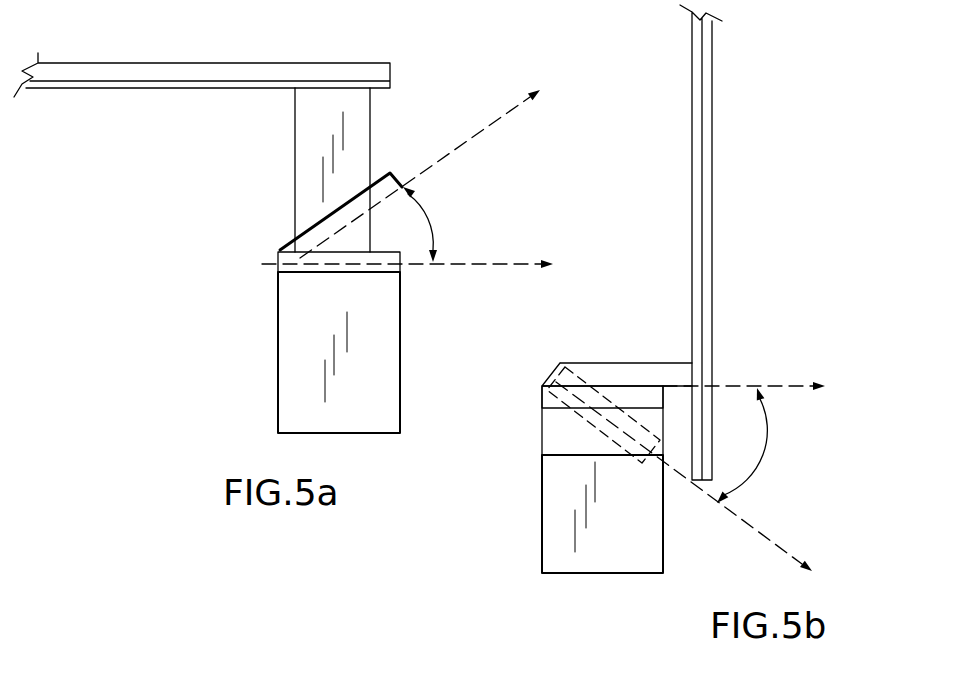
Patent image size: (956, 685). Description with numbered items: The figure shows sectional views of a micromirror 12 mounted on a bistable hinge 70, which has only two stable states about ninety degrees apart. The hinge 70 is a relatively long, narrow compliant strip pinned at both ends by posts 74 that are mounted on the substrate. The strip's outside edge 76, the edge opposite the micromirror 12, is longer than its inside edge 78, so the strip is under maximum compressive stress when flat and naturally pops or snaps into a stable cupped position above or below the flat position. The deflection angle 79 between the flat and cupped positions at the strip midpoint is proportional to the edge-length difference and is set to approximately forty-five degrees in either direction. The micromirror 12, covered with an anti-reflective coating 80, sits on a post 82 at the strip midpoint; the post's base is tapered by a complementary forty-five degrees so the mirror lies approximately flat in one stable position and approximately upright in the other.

In FIG. 5A, the micromirror 12 is at (121, 131).
In FIG. 5A, the hinge 70 is at (242, 326).
In FIG. 5B, the hinge 70 is at (490, 542).
In FIG. 5A, the post 74 is at (378, 383).
In FIG. 5B, the post 74 is at (653, 547).
In FIG. 5A, the outside edge 76 is at (392, 180).
In FIG. 5B, the outside edge 76 is at (655, 455).
In FIG. 5A, the inside edge 78 is at (278, 262).
In FIG. 5B, the inside edge 78 is at (553, 374).
In FIG. 5A, the deflection angle 79 is at (430, 215).
In FIG. 5B, the deflection angle 79 is at (767, 443).
In FIG. 5A, the anti-reflective coating 80 is at (195, 62).
In FIG. 5B, the anti-reflective coating 80 is at (712, 122).
In FIG. 5A, the post 82 is at (360, 125).
In FIG. 5B, the post 82 is at (647, 375).